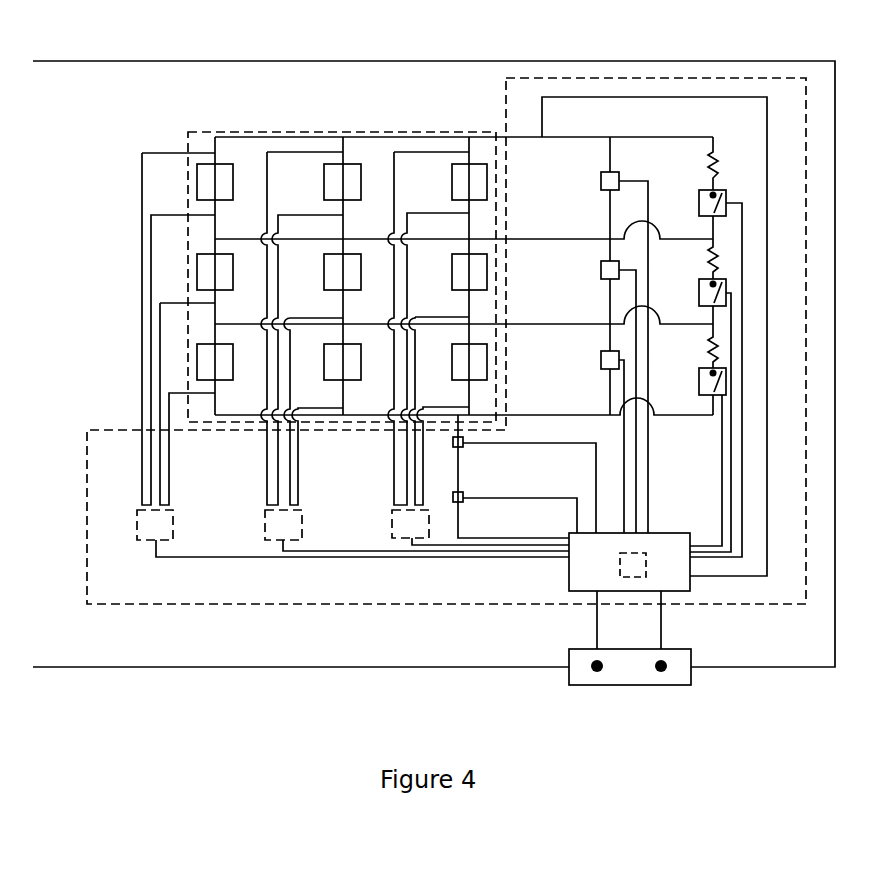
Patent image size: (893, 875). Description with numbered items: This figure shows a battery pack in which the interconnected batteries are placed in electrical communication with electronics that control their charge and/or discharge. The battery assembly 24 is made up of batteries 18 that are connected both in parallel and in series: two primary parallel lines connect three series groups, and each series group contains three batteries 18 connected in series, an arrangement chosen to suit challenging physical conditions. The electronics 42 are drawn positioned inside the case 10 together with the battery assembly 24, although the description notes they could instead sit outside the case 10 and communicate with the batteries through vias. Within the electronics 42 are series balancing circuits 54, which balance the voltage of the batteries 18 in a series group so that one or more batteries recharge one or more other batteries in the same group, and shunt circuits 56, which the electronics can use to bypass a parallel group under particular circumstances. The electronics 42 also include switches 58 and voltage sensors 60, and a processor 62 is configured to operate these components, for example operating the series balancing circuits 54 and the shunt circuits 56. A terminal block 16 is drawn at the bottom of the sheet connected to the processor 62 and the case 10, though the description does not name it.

The case 10 is at (826, 61).
The power source / battery terminal block 16 is at (569, 686).
The batteries 18 is at (222, 165).
The battery assembly 24 is at (186, 132).
The electronics 42 is at (534, 78).
The series balancing circuits 54 is at (173, 517).
The shunt circuits 56 is at (648, 130).
The switches 58 is at (463, 449).
The voltage sensors 60 is at (619, 174).
The processor 62 is at (628, 553).